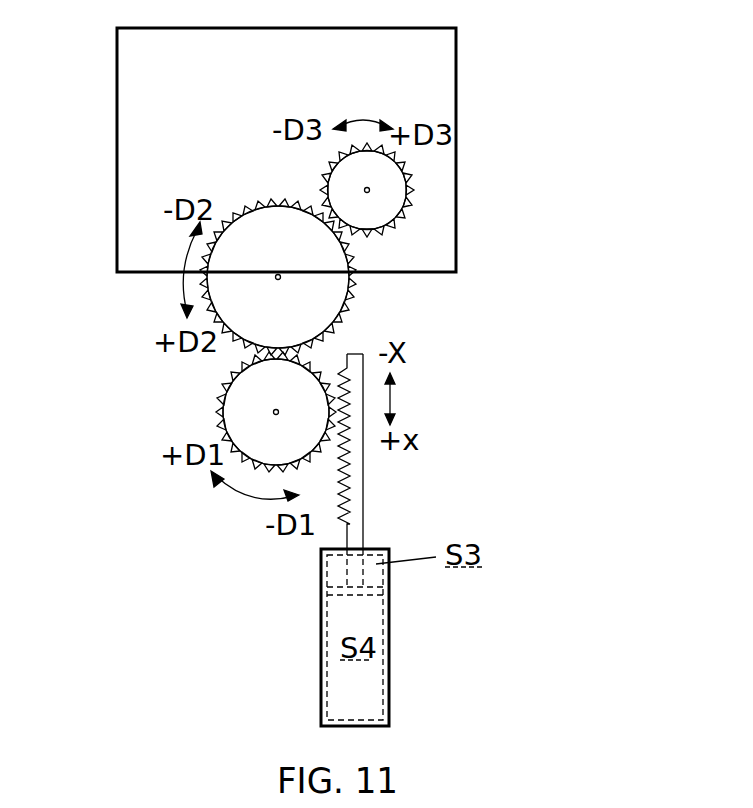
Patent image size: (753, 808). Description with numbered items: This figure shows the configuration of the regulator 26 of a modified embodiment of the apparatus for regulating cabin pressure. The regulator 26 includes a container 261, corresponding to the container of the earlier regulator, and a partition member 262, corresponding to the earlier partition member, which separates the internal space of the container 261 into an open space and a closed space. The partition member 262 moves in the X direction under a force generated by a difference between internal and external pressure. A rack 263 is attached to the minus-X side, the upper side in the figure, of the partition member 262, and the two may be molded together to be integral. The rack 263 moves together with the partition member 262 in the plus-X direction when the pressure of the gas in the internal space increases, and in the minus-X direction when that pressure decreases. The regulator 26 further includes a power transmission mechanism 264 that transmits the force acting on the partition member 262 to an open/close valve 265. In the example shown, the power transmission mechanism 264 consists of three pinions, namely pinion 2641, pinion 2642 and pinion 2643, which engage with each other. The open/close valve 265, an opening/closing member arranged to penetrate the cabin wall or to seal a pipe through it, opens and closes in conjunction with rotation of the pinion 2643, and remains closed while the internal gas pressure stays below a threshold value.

The regulator 26 is at (566, 150).
The container 261 is at (390, 690).
The partition member 262 is at (376, 590).
The rack 263 is at (364, 482).
The power transmission mechanism 264 is at (86, 137).
The pinion 2641 is at (243, 403).
The pinion 2642 is at (345, 284).
The pinion 2643 is at (383, 192).
The open/close valve 265 is at (458, 82).